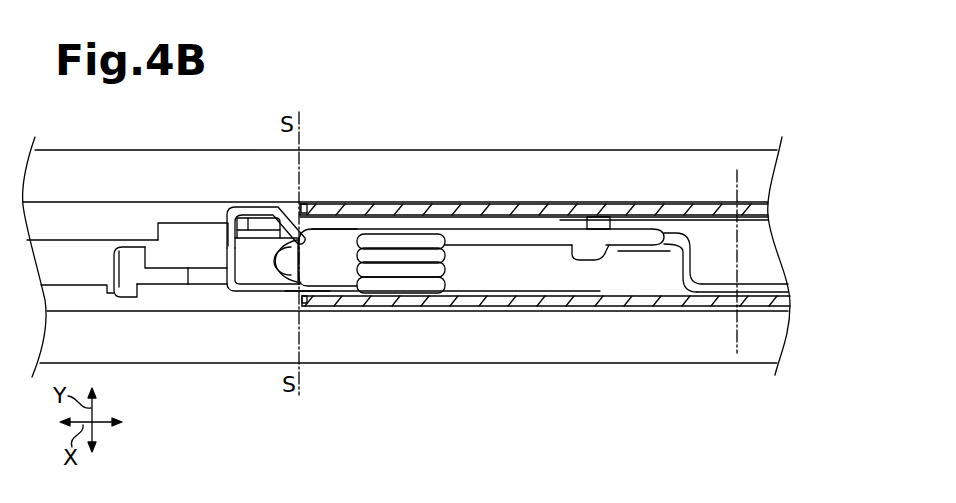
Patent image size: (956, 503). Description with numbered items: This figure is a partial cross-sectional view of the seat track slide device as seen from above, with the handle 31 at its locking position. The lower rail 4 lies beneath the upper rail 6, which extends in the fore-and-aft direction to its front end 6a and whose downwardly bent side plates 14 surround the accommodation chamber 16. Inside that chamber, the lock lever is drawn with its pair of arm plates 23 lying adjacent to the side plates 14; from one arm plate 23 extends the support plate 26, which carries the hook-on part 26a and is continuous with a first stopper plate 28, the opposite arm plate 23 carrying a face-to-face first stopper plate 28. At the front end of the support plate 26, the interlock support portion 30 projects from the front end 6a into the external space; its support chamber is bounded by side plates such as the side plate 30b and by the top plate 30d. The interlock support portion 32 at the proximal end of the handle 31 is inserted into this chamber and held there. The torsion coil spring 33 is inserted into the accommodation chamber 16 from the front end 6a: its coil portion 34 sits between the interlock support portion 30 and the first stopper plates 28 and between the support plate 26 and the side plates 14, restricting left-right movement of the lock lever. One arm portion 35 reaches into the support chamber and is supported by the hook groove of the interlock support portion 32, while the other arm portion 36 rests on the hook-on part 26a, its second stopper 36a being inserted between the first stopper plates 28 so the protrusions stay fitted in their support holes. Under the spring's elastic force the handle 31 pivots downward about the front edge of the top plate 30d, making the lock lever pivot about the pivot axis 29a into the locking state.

The lower rail 4 is at (349, 366).
The upper rail 6 is at (353, 205).
The front end 6a is at (302, 205).
The side plates 14 is at (703, 212).
The accommodation chamber 16 is at (563, 296).
The arm plates 23 is at (708, 294).
The support plate 26 is at (437, 213).
The hook-on part 26a is at (595, 261).
The first stopper plate 28 is at (643, 219).
The pivot axis 29a is at (737, 190).
The interlock support portion 30 is at (191, 286).
The side plate 30b is at (108, 298).
The top plate 30d is at (190, 231).
The handle 31 is at (57, 257).
The interlock support portion 32 is at (255, 247).
The torsion coil spring 33 is at (450, 263).
The coil portion 34 is at (445, 268).
The arm portion 35 is at (258, 293).
The arm portion 36 is at (503, 238).
The second stopper 36a is at (669, 238).